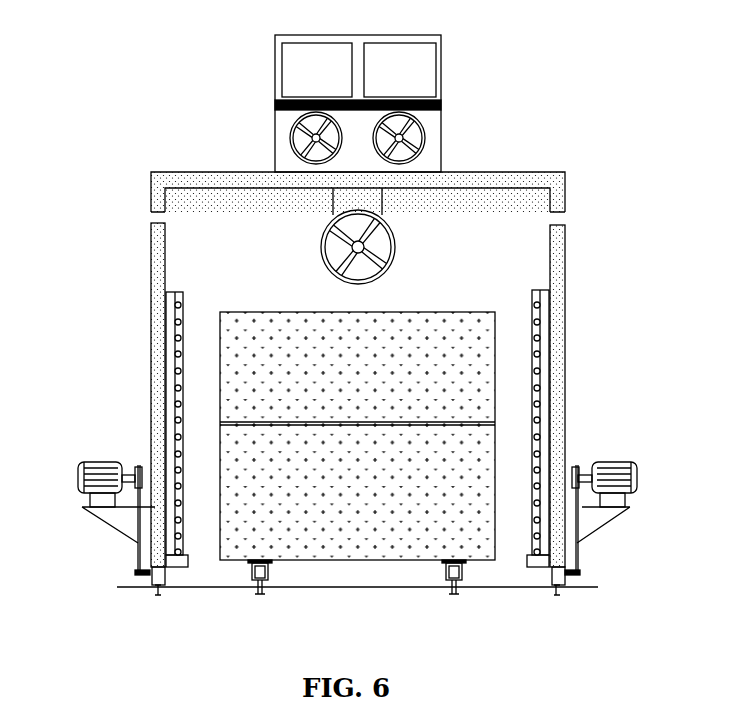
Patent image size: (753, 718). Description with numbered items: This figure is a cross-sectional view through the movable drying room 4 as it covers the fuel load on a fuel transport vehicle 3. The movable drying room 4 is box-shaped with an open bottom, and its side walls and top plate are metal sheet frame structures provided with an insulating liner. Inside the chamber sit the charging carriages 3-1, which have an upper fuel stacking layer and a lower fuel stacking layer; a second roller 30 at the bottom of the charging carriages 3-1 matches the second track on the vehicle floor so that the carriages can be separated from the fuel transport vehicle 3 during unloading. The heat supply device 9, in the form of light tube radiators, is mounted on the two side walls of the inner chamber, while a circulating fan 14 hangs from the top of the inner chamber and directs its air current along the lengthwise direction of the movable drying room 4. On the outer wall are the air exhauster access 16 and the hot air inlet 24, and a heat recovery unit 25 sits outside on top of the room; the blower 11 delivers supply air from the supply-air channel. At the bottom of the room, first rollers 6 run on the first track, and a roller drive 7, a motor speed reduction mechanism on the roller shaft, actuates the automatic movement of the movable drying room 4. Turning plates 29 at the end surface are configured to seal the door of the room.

The heat recovery unit 25 is at (288, 120).
The blower 11 is at (417, 135).
The circulating fan 14 is at (397, 228).
The hot air inlet 24 is at (158, 215).
The air exhauster access 16 is at (562, 222).
The movable drying room 4 is at (157, 410).
The heat supply device 9 is at (170, 292).
The charging carriage 3-1 is at (463, 376).
The second roller 30 is at (454, 577).
The roller drive 7 is at (112, 477).
The turning plate 29 is at (145, 585).
The first roller 6 is at (160, 585).
The fuel transport vehicle 3 is at (585, 588).